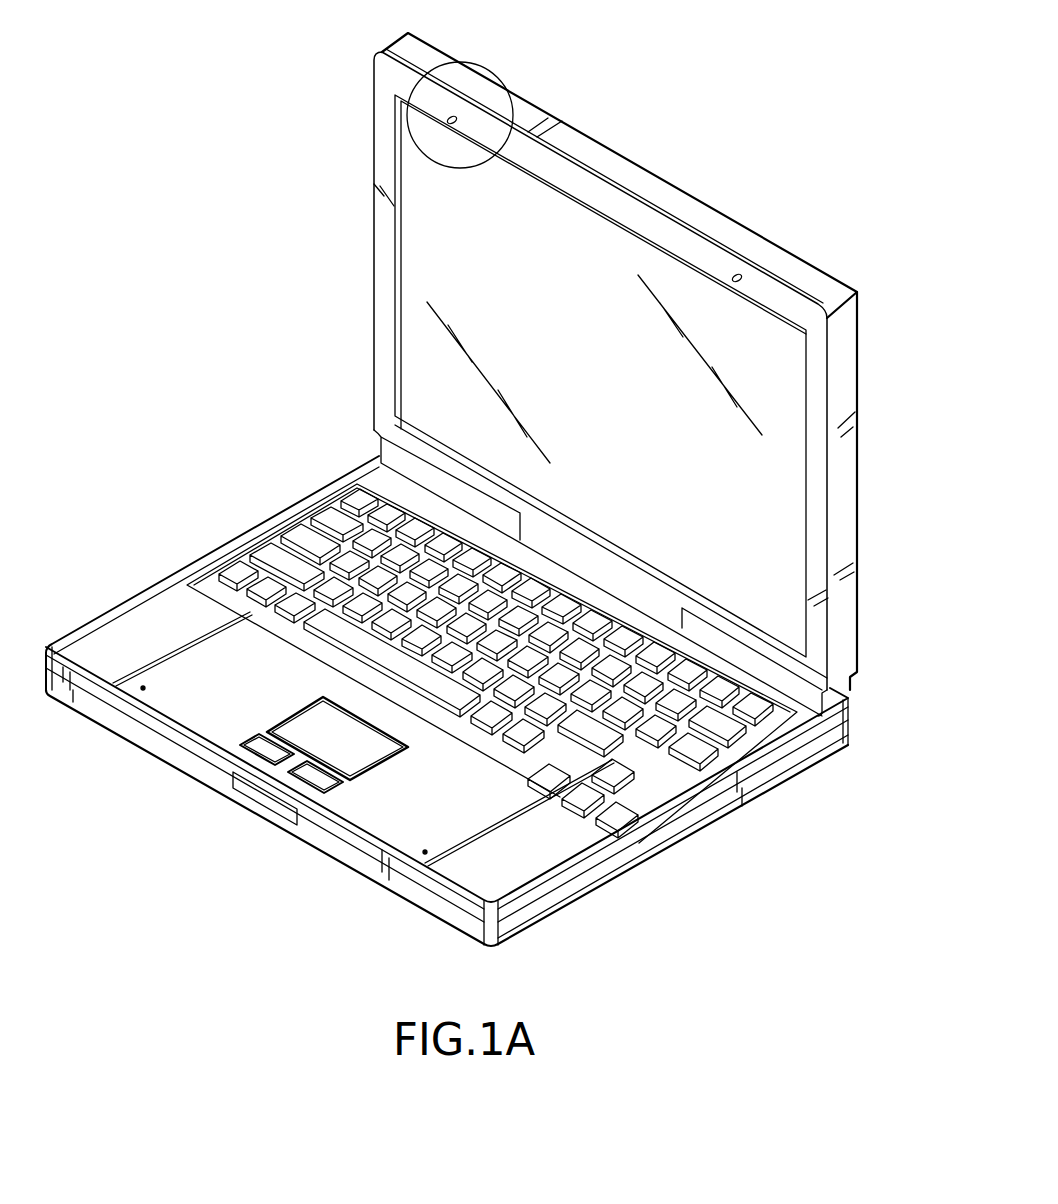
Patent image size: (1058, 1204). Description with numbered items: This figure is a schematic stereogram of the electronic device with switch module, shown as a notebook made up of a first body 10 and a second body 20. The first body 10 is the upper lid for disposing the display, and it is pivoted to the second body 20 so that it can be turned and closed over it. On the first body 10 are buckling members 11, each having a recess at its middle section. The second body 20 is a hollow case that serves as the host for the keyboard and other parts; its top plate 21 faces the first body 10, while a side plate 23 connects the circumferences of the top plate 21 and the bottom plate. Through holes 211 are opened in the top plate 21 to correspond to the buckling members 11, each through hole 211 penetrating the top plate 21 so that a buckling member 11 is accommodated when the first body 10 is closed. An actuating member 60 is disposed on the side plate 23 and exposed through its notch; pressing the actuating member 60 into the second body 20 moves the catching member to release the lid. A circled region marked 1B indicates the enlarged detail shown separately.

The enlarged detail region of FIG. 1B is at (497, 73).
The first body 10 is at (631, 137).
The buckling member 11 is at (740, 273).
The second body 20 is at (234, 529).
The top plate 21 is at (128, 615).
The through hole 211 is at (425, 850).
The side plate 23 is at (320, 833).
The actuating member 60 is at (249, 806).